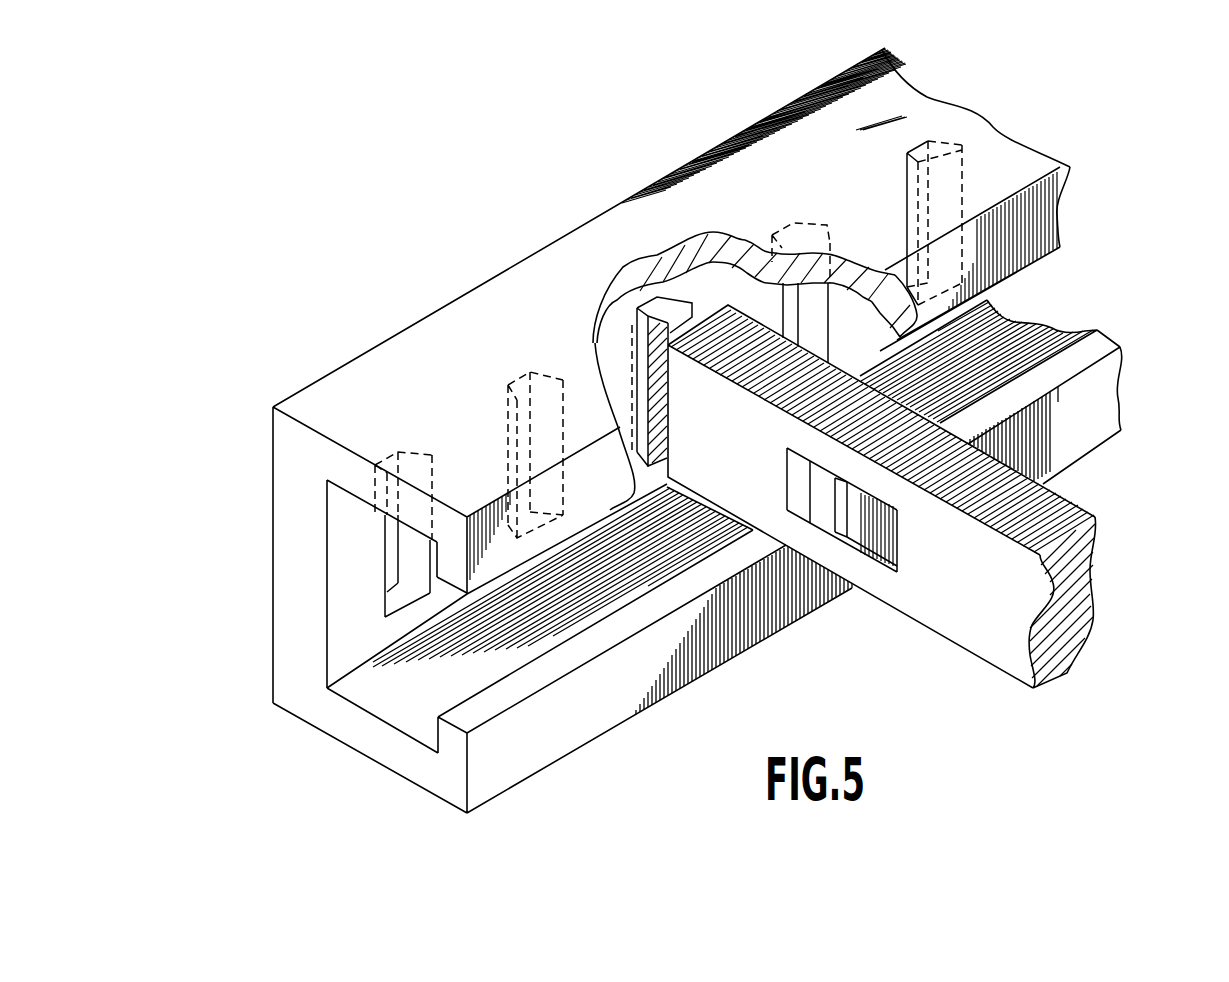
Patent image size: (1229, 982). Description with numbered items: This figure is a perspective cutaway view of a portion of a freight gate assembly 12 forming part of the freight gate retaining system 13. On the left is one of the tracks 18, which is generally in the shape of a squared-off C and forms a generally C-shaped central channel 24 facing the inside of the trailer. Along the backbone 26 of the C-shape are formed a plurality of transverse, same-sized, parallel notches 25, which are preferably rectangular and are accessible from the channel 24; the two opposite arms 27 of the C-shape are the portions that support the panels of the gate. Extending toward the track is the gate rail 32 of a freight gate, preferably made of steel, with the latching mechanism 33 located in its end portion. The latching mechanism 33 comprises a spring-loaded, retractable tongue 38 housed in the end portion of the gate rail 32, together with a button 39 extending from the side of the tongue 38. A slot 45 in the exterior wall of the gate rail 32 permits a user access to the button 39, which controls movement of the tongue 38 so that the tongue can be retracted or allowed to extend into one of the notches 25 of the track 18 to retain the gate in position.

The connector housing 12 is at (373, 313).
The freight gate retaining system 13 is at (1097, 575).
The track 18 is at (490, 303).
The central channel 24 is at (412, 690).
The notches 25 is at (510, 423).
The backbone 26 is at (340, 572).
The arms 27 is at (479, 578).
The gate rail 32 is at (952, 597).
The latching mechanism 33 is at (852, 600).
The tongue 38 is at (640, 360).
The button 39 is at (823, 493).
The slot 45 is at (882, 560).